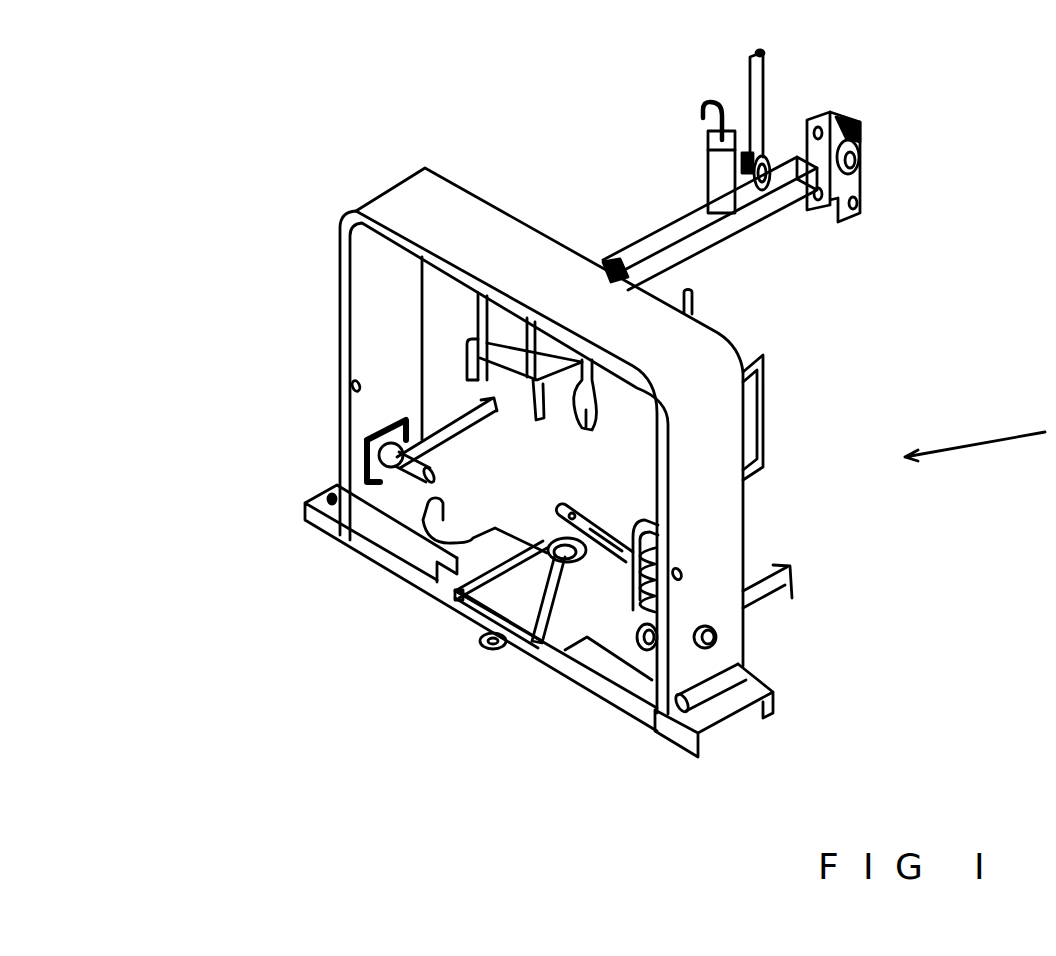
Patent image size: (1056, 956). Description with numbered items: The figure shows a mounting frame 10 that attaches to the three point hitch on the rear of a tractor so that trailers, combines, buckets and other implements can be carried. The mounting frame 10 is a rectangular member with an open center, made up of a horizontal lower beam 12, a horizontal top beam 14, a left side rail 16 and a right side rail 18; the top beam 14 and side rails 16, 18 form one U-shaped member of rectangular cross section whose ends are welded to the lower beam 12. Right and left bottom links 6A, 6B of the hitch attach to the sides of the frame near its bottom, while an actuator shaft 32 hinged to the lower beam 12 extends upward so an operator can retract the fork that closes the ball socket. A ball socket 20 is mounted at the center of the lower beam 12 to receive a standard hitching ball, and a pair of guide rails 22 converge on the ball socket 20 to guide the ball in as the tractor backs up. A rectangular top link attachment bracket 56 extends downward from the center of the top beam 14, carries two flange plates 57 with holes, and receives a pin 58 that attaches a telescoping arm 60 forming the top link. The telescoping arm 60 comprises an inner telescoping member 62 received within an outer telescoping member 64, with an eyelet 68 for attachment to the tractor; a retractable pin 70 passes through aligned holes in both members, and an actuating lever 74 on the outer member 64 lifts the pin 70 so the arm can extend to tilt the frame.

The mounting frame 10 is at (363, 350).
The lower beam 12 is at (410, 542).
The top beam 14 is at (700, 343).
The left side rail 16 is at (360, 417).
The right side rail 18 is at (725, 535).
The ball socket 20 is at (520, 650).
The guide rails 22 is at (463, 603).
The actuator shaft 32 is at (770, 427).
The top link attachment bracket 56 is at (503, 325).
The flange plates 57 is at (468, 350).
The pin 58 is at (586, 429).
The telescoping arm 60 is at (766, 232).
The inner telescoping member 62 is at (602, 262).
The outer telescoping member 64 is at (680, 230).
The eyelet 68 is at (860, 133).
The retractable pin 70 is at (718, 177).
The actuating lever 74 is at (762, 122).
The right bottom link 6A is at (447, 430).
The left bottom link 6B is at (758, 593).